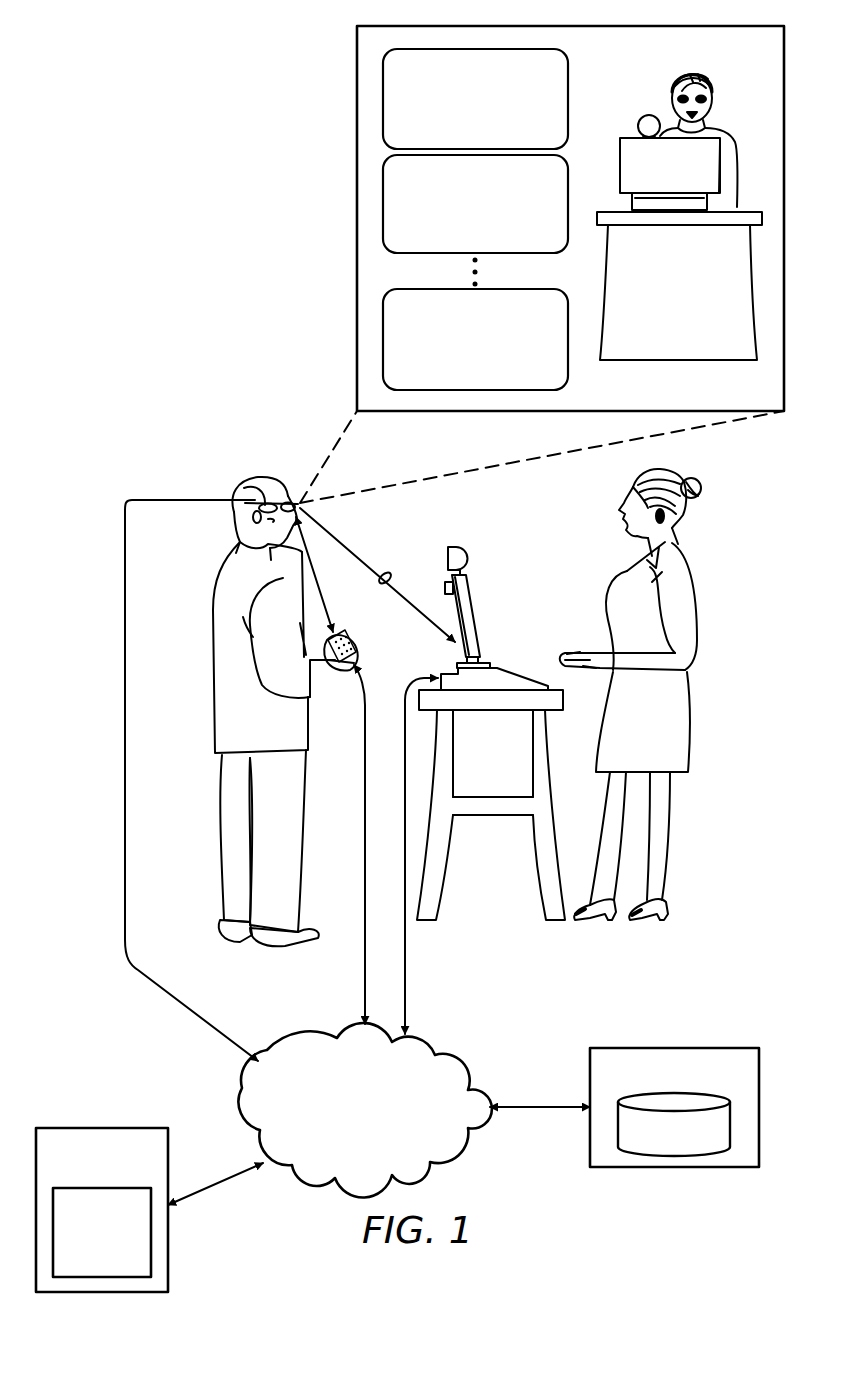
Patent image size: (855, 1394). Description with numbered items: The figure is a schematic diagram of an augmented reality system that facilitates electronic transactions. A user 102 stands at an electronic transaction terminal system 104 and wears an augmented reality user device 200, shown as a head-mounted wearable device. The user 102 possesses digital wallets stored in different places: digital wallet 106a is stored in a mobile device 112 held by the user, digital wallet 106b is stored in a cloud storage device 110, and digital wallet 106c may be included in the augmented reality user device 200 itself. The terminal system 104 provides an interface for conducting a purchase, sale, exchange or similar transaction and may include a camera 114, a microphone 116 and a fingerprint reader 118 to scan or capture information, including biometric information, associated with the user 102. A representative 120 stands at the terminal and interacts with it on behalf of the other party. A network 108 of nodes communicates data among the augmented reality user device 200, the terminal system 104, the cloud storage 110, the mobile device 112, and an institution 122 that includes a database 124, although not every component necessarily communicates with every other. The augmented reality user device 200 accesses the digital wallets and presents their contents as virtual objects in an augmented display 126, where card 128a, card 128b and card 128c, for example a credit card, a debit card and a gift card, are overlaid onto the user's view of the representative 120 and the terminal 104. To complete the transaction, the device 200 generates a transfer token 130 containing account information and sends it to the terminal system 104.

The user 102 is at (215, 686).
The electronic transaction terminal system 104 is at (498, 668).
The digital wallet 106a is at (352, 634).
The digital wallet 106b is at (80, 1243).
The digital wallet 106c is at (260, 500).
The network 108 is at (349, 1121).
The cloud storage device 110 is at (85, 1163).
The mobile device 112 is at (355, 650).
The camera 114 is at (471, 550).
The microphone 116 is at (445, 583).
The fingerprint reader 118 is at (445, 676).
The representative 120 is at (688, 685).
The institution 122 is at (658, 1084).
The database 124 is at (658, 1145).
The augmented display 126 is at (357, 165).
The card 128a is at (383, 90).
The card 128b is at (383, 207).
The card 128c is at (383, 339).
The transfer token 130 is at (384, 582).
The augmented reality user device 200 is at (280, 492).